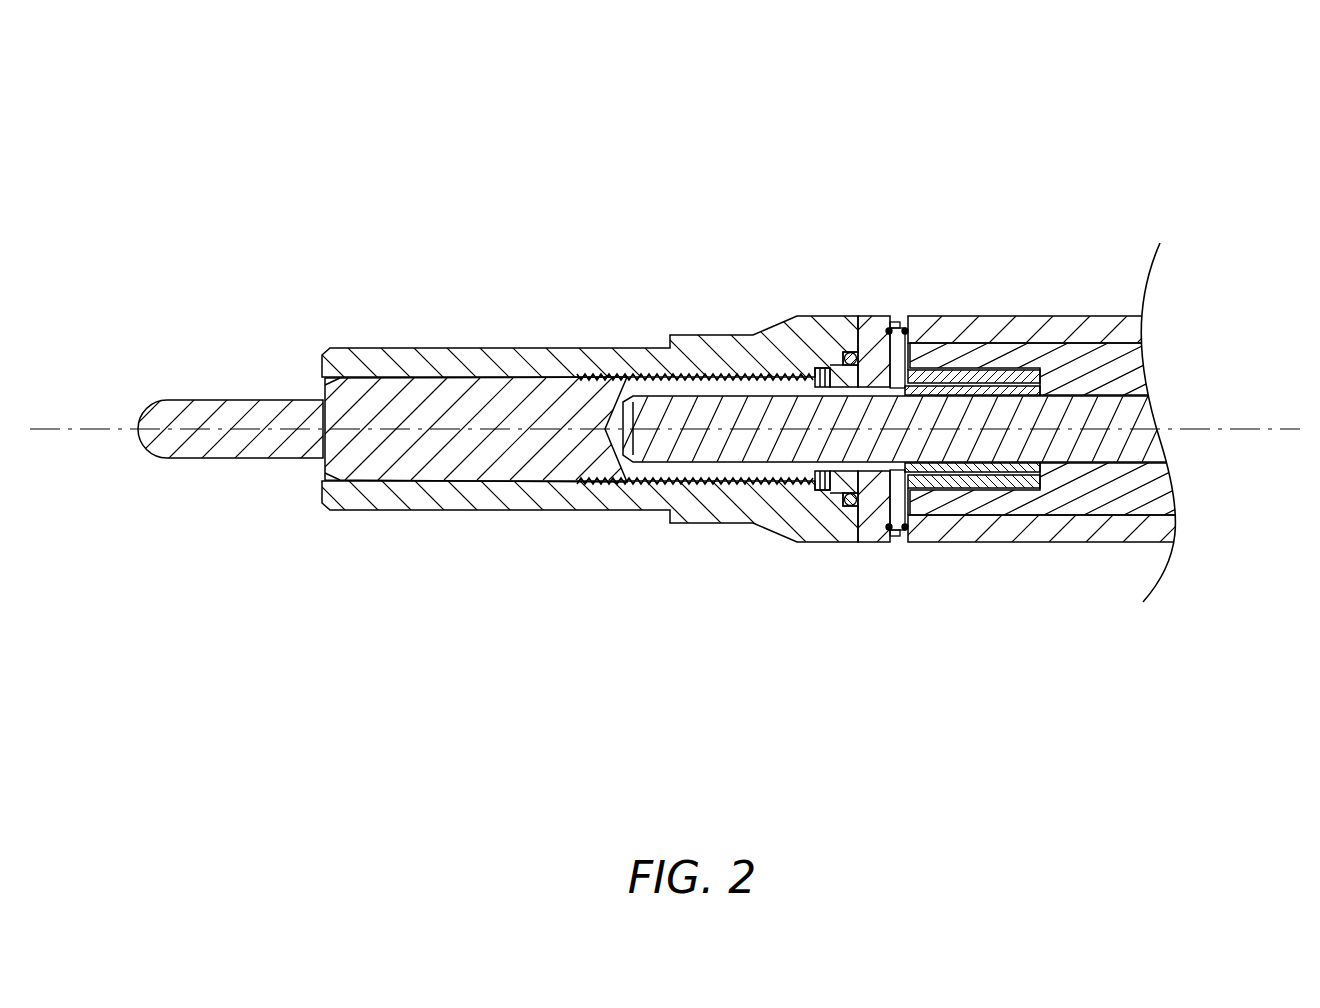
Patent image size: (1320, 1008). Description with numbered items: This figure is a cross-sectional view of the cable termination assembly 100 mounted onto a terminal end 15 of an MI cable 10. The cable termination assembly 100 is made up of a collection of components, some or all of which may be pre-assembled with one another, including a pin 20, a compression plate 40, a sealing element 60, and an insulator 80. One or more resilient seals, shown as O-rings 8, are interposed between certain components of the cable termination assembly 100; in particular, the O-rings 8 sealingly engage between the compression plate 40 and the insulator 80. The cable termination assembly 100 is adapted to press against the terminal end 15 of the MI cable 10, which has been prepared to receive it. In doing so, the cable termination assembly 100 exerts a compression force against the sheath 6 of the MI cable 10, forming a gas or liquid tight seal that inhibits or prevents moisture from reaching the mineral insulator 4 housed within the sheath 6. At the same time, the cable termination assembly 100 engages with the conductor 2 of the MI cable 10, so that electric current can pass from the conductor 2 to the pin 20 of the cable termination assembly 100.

The cable termination assembly 100 is at (584, 114).
The pin 20 is at (262, 450).
The insulator 80 is at (505, 352).
The compression plate 40 is at (880, 320).
The O-rings 8 is at (850, 506).
The sealing element 60 is at (900, 540).
The terminal end 15 is at (942, 433).
The MI cable 10 is at (1058, 429).
The mineral insulator 4 is at (942, 429).
The sheath 6 is at (1060, 489).
The conductor 2 is at (901, 429).